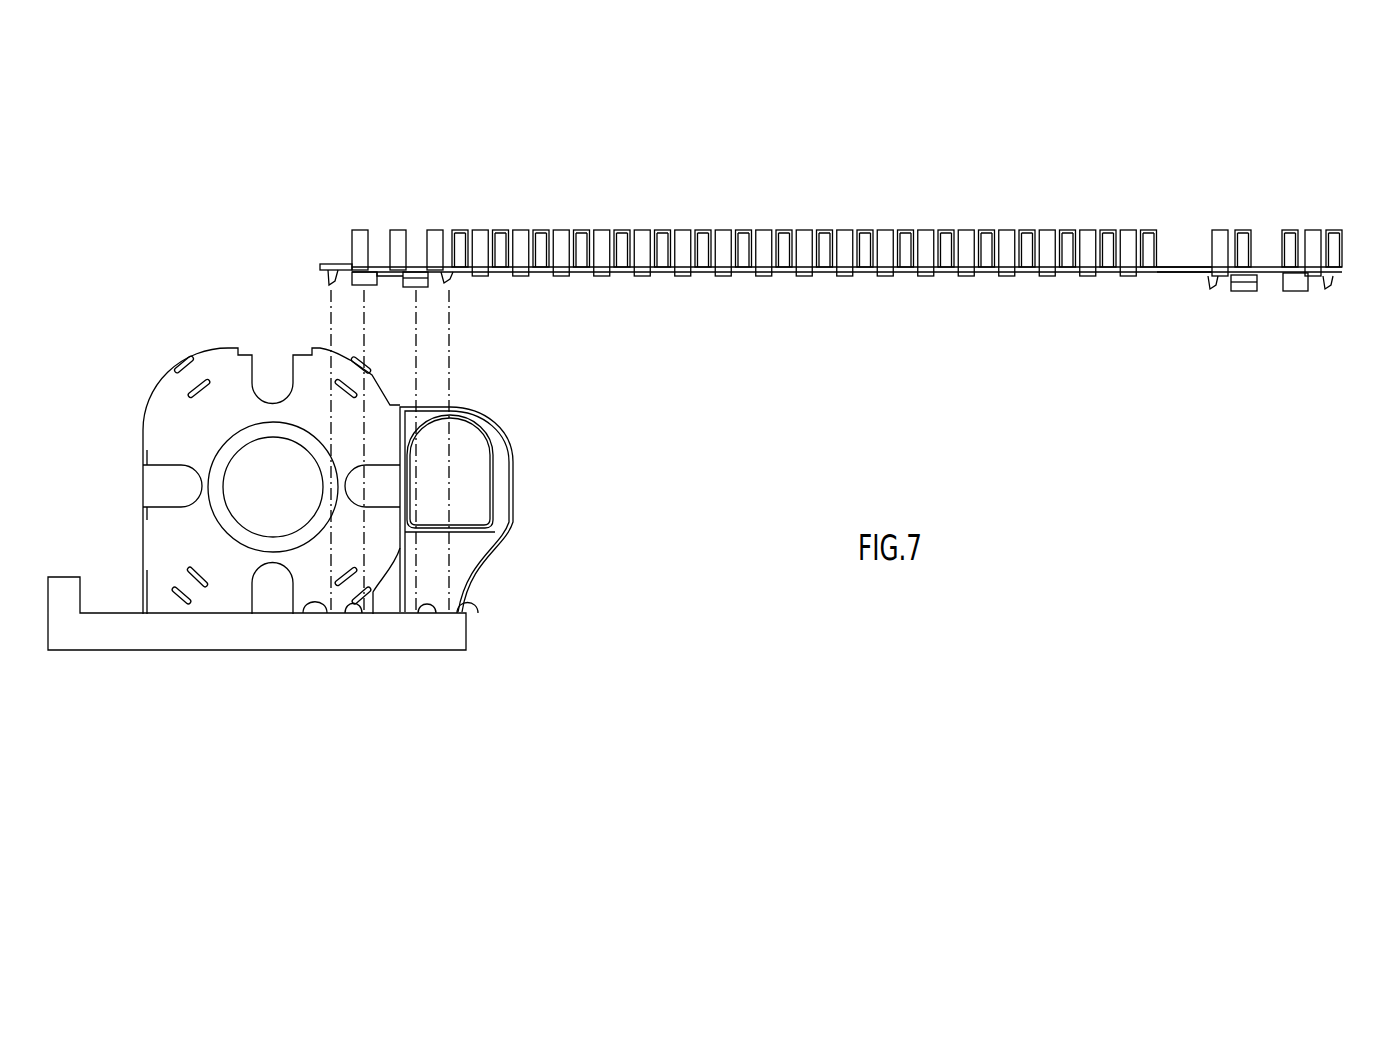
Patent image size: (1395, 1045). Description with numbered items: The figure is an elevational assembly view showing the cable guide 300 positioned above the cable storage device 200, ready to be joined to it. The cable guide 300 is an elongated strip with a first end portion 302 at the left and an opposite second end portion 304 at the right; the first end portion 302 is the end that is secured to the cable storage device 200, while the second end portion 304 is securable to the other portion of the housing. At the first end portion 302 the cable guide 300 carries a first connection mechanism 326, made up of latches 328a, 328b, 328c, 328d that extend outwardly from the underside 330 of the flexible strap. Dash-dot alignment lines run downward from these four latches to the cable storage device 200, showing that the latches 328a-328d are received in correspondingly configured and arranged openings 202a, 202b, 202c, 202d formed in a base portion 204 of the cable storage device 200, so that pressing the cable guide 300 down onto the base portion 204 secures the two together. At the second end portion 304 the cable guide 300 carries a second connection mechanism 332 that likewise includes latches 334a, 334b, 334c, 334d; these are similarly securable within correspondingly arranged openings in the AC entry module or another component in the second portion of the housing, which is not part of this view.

The cable storage device 200 is at (127, 428).
The opening 202a is at (313, 603).
The opening 202b is at (347, 610).
The opening 202c is at (430, 607).
The opening 202d is at (472, 602).
The base portion 204 is at (192, 635).
The cable guide 300 is at (870, 218).
The first end portion 302 is at (375, 218).
The second end portion 304 is at (1280, 220).
The first connection mechanism 326 is at (405, 334).
The latch 328a is at (316, 279).
The latch 328b is at (358, 286).
The latch 328c is at (420, 287).
The latch 328d is at (453, 280).
The underside 330 is at (623, 272).
The second connection mechanism 332 is at (1265, 369).
The latch 334a is at (1332, 290).
The latch 334b is at (1294, 292).
The latch 334c is at (1242, 292).
The latch 334d is at (1210, 289).